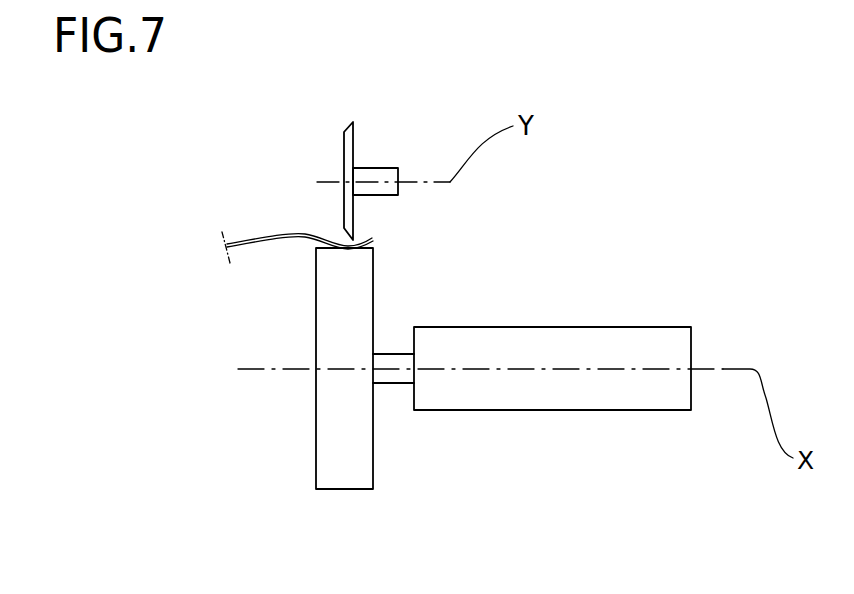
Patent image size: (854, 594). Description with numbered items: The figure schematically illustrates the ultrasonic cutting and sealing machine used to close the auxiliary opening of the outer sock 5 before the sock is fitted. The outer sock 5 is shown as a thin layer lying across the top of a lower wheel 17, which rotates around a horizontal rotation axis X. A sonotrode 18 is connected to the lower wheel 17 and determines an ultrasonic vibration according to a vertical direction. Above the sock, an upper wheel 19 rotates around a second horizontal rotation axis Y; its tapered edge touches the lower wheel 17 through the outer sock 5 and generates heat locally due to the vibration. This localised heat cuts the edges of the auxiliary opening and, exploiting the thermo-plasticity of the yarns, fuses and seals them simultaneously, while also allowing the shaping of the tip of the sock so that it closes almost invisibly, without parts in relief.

The outer sock 5 is at (258, 240).
The lower wheel 17 is at (373, 464).
The sonotrode 18 is at (603, 327).
The upper wheel 19 is at (353, 152).